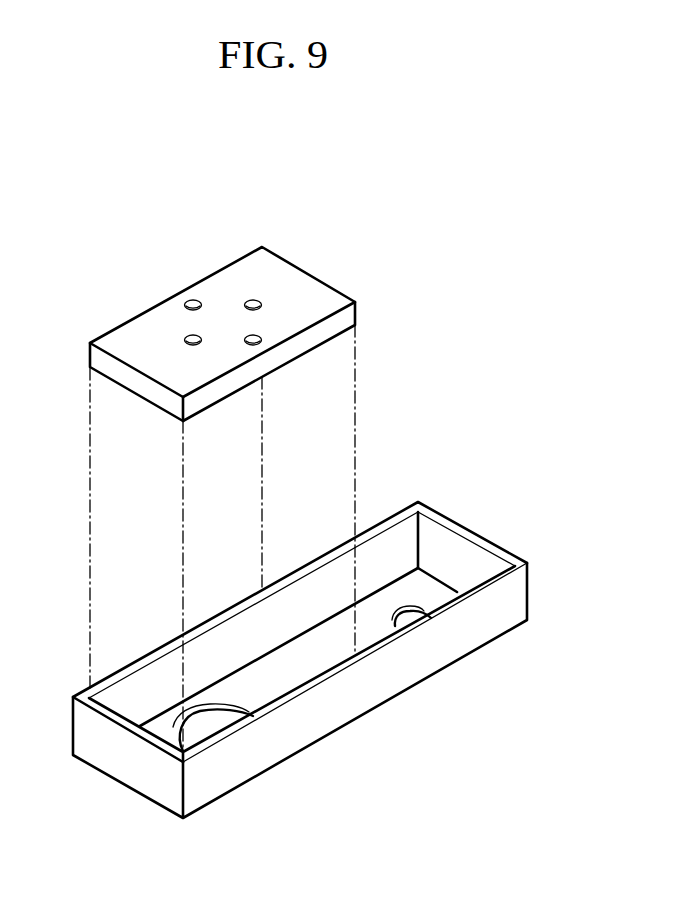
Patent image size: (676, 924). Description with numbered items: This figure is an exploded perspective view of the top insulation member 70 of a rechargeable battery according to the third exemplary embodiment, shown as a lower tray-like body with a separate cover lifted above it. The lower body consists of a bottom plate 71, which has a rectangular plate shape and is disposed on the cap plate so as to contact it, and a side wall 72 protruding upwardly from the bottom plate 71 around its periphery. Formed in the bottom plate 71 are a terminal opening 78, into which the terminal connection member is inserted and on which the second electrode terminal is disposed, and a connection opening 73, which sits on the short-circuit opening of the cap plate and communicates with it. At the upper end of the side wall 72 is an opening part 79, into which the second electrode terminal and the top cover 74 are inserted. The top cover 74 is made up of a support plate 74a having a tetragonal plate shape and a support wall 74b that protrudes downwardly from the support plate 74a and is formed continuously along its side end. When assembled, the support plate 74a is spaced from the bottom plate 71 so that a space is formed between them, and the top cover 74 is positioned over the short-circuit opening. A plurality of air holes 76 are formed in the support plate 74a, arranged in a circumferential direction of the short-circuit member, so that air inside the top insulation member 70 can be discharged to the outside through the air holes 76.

The top insulation member 70 is at (316, 628).
The bottom plate 71 is at (398, 594).
The side wall 72 is at (445, 547).
The connection opening 73 is at (238, 708).
The top cover 74 is at (266, 471).
The support plate 74a is at (146, 333).
The support wall 74b is at (307, 342).
The air holes 76 is at (252, 298).
The terminal opening 78 is at (412, 603).
The opening part 79 is at (163, 645).